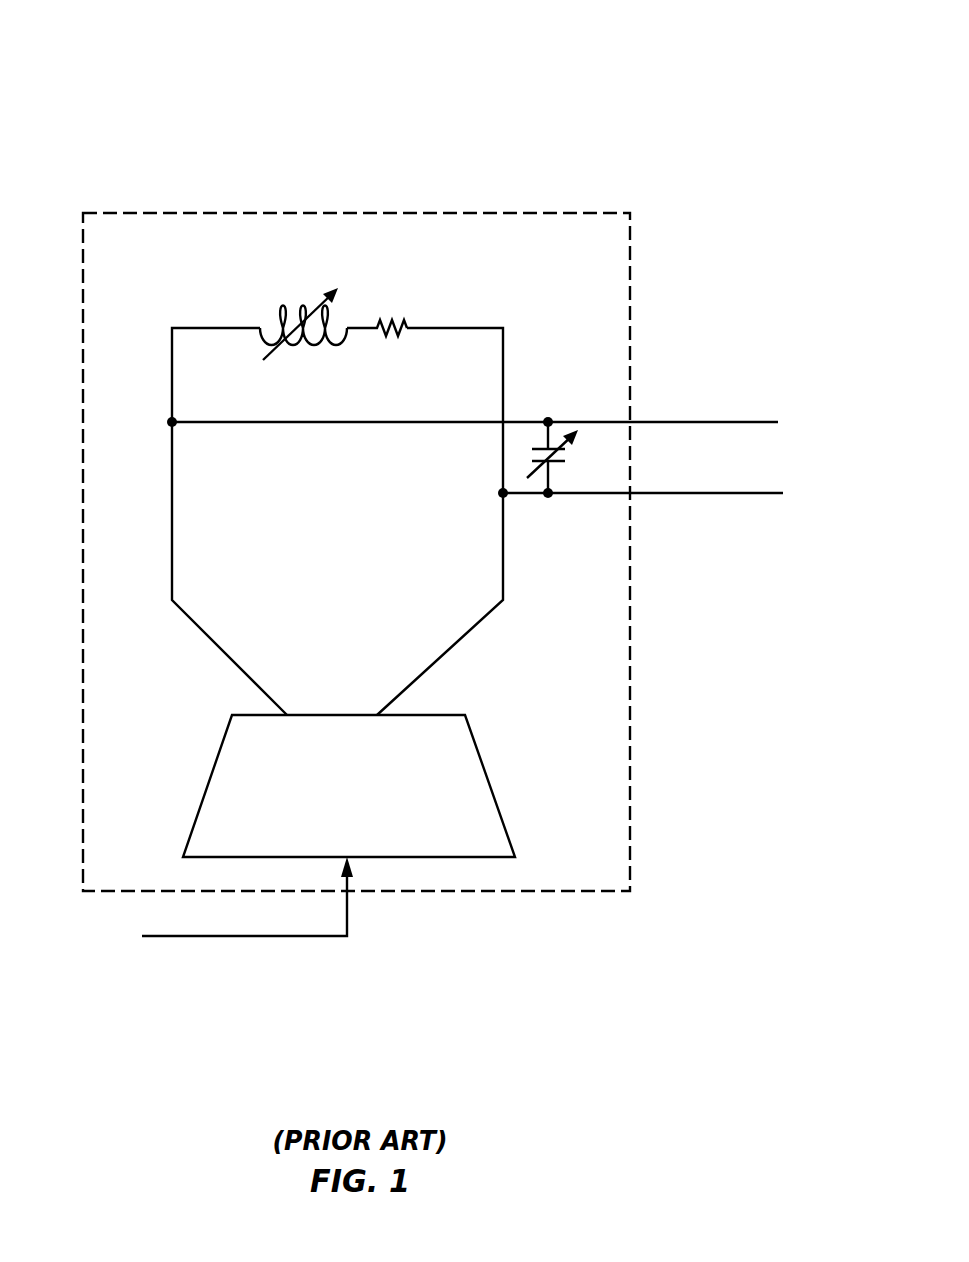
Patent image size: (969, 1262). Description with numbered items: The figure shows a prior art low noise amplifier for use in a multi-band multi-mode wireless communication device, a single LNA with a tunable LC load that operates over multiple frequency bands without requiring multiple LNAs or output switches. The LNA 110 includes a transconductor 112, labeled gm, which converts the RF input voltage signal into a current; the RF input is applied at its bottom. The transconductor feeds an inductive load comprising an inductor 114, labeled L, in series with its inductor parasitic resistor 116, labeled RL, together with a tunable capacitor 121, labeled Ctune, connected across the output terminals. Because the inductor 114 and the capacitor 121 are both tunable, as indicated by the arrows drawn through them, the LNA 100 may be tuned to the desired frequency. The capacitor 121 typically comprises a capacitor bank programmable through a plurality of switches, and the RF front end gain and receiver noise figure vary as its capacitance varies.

The LNA 100 is at (433, 469).
The LNA 110 is at (563, 213).
The transconductor 112 is at (441, 714).
The inductor 114 is at (281, 312).
The inductor parasitic resistor 116 is at (400, 312).
The capacitor 121 is at (549, 418).